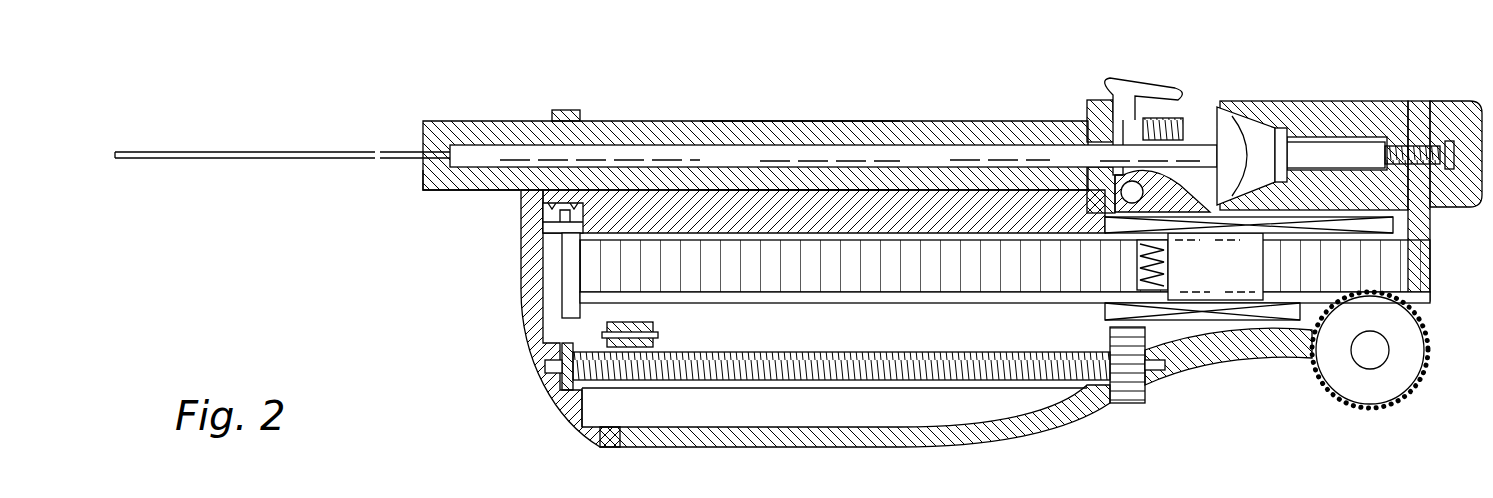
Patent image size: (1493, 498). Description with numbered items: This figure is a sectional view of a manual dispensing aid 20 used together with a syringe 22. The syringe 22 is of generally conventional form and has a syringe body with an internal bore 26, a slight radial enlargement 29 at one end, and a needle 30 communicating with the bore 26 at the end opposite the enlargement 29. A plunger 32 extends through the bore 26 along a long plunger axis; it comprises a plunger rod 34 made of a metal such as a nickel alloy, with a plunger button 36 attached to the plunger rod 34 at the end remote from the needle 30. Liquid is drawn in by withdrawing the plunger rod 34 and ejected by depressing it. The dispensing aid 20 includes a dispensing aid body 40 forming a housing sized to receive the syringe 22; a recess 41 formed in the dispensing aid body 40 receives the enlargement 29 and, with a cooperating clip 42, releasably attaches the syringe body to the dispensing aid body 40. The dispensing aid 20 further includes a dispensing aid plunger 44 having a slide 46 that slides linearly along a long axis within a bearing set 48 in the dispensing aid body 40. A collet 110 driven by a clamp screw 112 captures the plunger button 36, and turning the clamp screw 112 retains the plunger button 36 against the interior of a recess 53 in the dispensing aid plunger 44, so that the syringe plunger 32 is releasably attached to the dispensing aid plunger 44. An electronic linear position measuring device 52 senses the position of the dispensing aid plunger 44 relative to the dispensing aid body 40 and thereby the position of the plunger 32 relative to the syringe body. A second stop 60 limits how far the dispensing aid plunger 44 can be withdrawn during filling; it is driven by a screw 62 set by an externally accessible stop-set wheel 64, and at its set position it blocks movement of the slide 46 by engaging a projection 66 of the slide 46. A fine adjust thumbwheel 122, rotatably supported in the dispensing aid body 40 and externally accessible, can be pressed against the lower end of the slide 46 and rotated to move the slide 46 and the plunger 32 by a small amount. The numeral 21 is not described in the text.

The manual dispensing aid 20 is at (385, 287).
The needle hub 21 is at (455, 190).
The syringe 22 is at (490, 116).
The internal bore 26 is at (654, 142).
The radial enlargement 29 is at (1088, 108).
The needle 30 is at (280, 158).
The plunger 32 is at (868, 148).
The plunger rod 34 is at (810, 150).
The plunger button 36 is at (1258, 110).
The dispensing aid body 40 is at (520, 262).
The recess 41 is at (1085, 210).
The clip 42 is at (1105, 80).
The dispensing aid plunger 44 is at (864, 299).
The slide 46 is at (972, 300).
The bearing set 48 is at (1400, 225).
The electronic linear position measuring device 52 is at (1230, 290).
The recess 53 is at (1240, 128).
The second stop 60 is at (655, 328).
The screw 62 is at (770, 356).
The stop-set wheel 64 is at (1130, 405).
The projection 66 is at (545, 300).
The collet 110 is at (1212, 108).
The clamp screw 112 is at (1463, 100).
The fine adjust thumbwheel 122 is at (1365, 385).